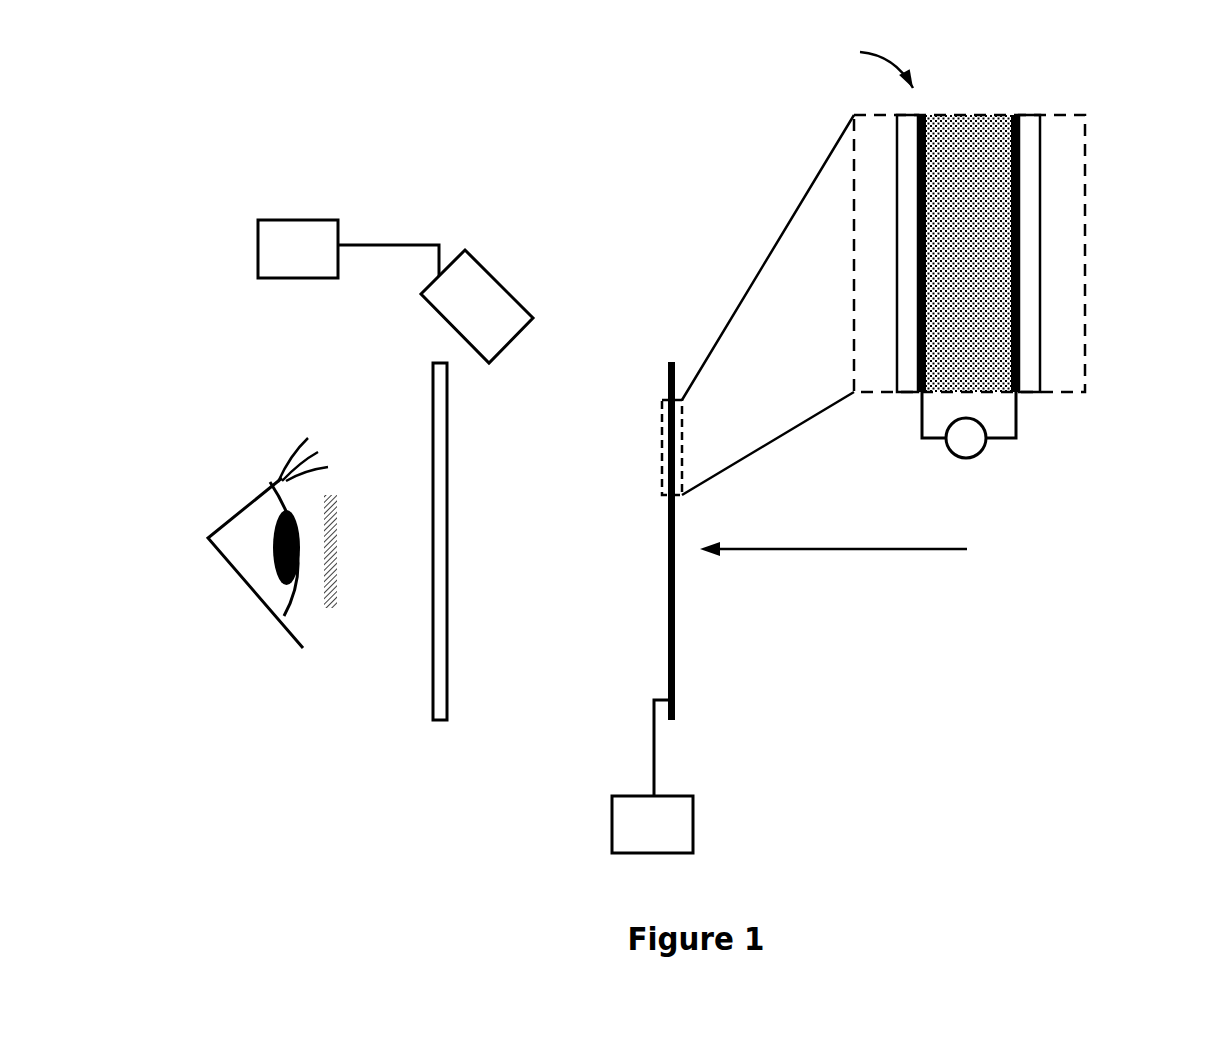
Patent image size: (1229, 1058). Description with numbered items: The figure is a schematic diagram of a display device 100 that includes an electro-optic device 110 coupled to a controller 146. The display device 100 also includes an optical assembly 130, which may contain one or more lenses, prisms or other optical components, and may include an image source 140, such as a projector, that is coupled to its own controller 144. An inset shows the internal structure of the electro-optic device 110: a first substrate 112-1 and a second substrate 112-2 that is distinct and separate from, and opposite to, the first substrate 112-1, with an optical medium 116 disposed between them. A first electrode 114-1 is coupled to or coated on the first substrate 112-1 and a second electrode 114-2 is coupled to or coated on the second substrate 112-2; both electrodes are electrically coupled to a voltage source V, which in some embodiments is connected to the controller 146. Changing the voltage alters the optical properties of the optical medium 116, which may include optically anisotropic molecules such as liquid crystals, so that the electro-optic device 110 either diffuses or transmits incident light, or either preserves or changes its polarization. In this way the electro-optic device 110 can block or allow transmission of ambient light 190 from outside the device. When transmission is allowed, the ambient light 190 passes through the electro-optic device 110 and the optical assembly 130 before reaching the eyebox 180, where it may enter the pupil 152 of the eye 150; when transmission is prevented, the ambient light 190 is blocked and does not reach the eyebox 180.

The display device 100 is at (388, 132).
The electro-optic device 110 is at (672, 362).
The first substrate 112-1 is at (912, 385).
The second substrate 112-2 is at (1025, 127).
The first electrode 114-1 is at (920, 302).
The second electrode 114-2 is at (1018, 263).
The optical medium 116 is at (984, 265).
The optical assembly 130 is at (433, 693).
The image source 140 is at (483, 267).
The controller 144 is at (298, 249).
The controller 146 is at (652, 824).
The eye 150 is at (251, 543).
The pupil 152 is at (286, 507).
The eyebox 180 is at (333, 607).
The ambient light 190 is at (927, 549).